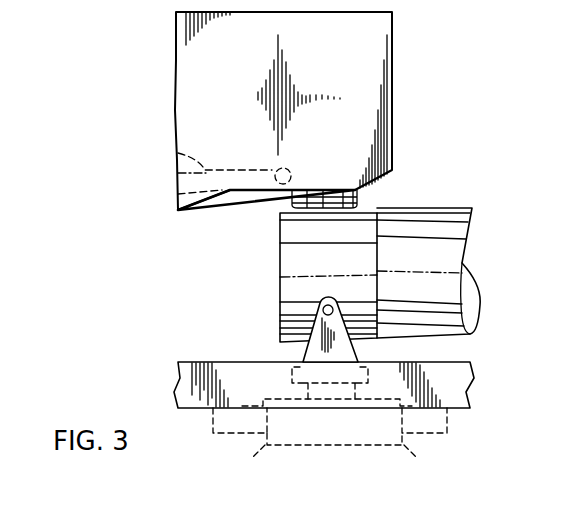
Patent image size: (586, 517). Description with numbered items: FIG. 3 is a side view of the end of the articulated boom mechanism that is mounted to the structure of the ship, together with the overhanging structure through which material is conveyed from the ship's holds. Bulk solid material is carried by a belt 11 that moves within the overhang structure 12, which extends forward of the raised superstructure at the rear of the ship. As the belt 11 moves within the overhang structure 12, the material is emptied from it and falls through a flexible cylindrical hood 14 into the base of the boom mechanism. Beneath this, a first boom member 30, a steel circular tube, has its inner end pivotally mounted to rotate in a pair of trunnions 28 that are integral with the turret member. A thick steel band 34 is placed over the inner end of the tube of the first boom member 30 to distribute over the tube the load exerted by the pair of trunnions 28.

The belt 11 is at (172, 151).
The overhang structure 12 is at (373, 31).
The flexible cylindrical hood 14 is at (288, 197).
The trunnions 28 is at (307, 353).
The first boom member 30 is at (428, 228).
The thick steel band 34 is at (290, 262).